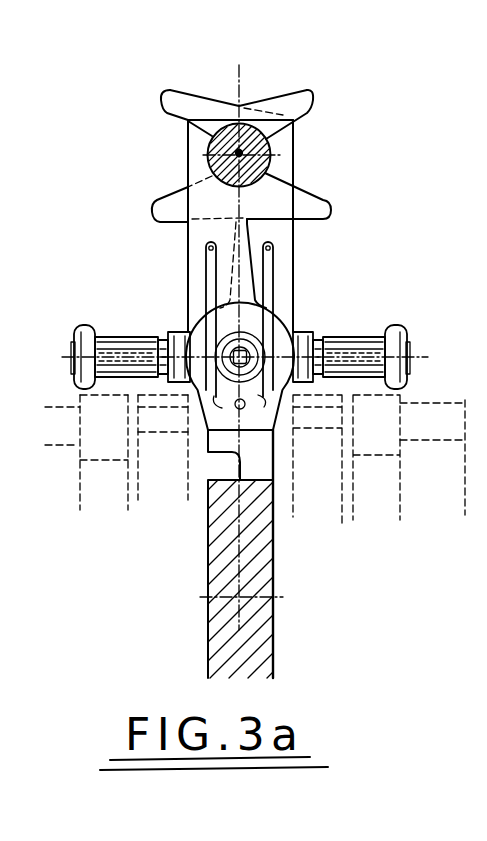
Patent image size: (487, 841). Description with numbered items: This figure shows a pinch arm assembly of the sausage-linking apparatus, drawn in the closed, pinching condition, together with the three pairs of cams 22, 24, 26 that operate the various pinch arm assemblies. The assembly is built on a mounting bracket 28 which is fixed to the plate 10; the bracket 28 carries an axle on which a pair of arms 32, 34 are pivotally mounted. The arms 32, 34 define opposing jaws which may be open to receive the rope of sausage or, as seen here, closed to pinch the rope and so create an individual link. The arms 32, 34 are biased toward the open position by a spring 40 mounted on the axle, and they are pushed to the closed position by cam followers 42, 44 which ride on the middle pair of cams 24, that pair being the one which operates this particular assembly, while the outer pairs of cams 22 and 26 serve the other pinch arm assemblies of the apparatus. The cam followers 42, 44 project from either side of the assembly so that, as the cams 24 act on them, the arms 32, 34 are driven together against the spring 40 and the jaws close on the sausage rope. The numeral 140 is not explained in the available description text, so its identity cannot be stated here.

The clamping device 140 is at (345, 92).
The arm 32 is at (193, 172).
The arm 34 is at (291, 167).
The spring 40 is at (210, 280).
The cam follower 42 is at (85, 326).
The cam follower 44 is at (399, 324).
The pair of cams 22 is at (310, 505).
The pair of cams 24 is at (370, 503).
The pair of cams 26 is at (428, 502).
The plate 10 is at (218, 627).
The mounting bracket 28 is at (270, 605).